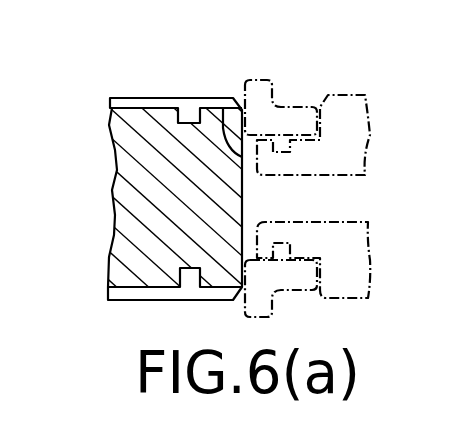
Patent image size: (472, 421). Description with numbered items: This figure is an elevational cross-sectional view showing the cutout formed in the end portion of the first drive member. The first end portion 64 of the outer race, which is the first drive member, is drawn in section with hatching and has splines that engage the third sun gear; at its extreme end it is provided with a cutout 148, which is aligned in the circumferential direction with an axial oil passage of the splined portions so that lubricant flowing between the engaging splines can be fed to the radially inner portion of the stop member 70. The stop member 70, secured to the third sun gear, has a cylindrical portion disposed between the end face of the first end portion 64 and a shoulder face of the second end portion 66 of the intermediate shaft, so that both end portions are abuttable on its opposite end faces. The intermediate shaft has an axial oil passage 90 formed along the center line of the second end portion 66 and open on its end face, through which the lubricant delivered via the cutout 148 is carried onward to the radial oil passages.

The first end portion 64 is at (120, 148).
The cutout 148 is at (223, 97).
The stop member 70 is at (277, 115).
The second end portion 66 is at (351, 112).
The axial oil passage 90 is at (345, 221).